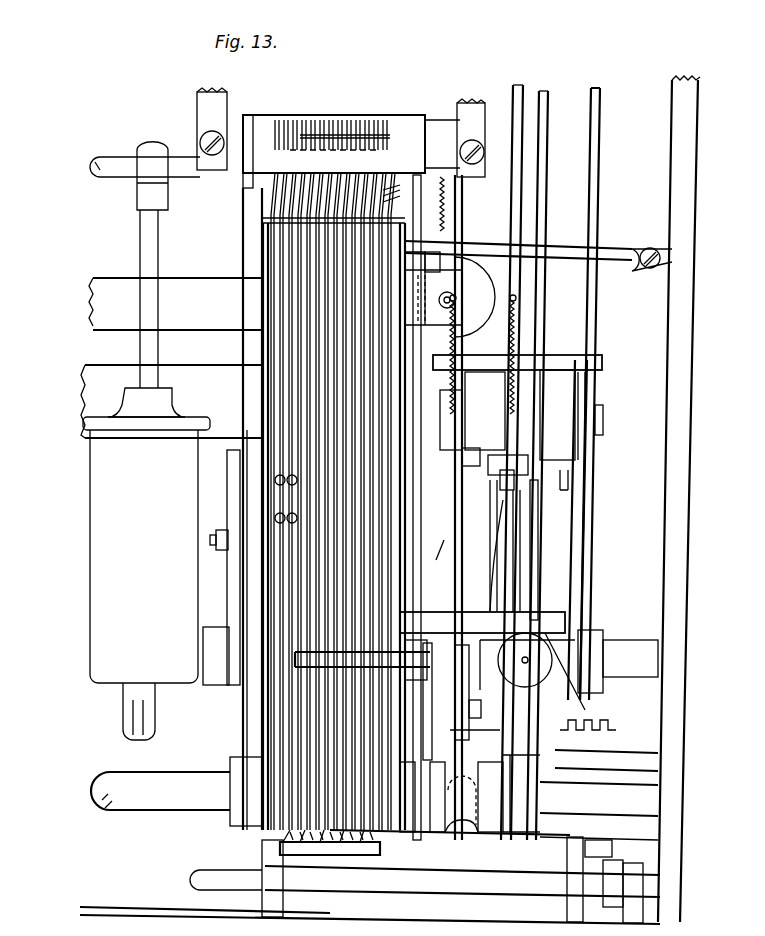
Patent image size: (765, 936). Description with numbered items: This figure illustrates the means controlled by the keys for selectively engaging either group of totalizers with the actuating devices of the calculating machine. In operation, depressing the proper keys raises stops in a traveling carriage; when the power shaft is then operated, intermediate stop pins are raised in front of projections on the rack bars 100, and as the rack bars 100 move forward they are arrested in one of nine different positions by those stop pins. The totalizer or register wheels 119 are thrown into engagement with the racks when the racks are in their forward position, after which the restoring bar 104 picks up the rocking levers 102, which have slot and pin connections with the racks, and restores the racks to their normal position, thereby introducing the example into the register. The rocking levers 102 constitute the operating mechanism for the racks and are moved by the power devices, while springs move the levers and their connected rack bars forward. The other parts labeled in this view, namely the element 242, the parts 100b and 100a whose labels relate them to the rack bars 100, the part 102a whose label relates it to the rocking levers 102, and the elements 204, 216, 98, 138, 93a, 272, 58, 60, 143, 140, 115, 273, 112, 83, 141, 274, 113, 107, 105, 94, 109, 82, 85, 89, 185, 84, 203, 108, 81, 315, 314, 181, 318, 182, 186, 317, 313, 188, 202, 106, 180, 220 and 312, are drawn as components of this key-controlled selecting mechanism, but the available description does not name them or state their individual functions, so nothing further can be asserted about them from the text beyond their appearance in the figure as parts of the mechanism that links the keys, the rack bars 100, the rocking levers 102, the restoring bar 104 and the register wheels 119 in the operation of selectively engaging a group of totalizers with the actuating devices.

The stop bar 242 is at (375, 130).
The reed holder 100b is at (275, 140).
The reed slot 100a is at (335, 157).
The rack bars 100 is at (332, 142).
The rod 204 is at (145, 176).
The bracket 216 is at (252, 182).
The rocking levers 102 is at (350, 212).
The restoring bar 104 is at (405, 200).
The spring 98 is at (447, 213).
The bar 138 is at (517, 155).
The frame bar 93a is at (553, 250).
The bar 272 is at (537, 276).
The bar 58 is at (171, 358).
The lever 60 is at (470, 296).
The cross bar with springs 143 is at (510, 345).
The block 140 is at (508, 400).
The block 115 is at (560, 413).
The rod 273 is at (540, 424).
The lug 112 is at (582, 445).
The block 83 is at (508, 468).
The block 141 is at (478, 470).
The lug 274 is at (556, 480).
The bar 113 is at (585, 494).
The lug 107 is at (222, 530).
The frame strip 105 is at (252, 730).
The reed frame 94 is at (407, 548).
The rod 109 is at (572, 521).
The rod 82 is at (490, 560).
The rod 85 is at (522, 555).
The link 89 is at (437, 585).
The link 185 is at (510, 597).
The cross bar 84 is at (486, 585).
The cylinder 203 is at (146, 446).
The strip 108 is at (226, 590).
The block 81 is at (245, 652).
The bar 315 is at (362, 660).
The bar 314 is at (432, 690).
The pulley 181 is at (520, 720).
The bar 318 is at (480, 712).
The block 182 is at (577, 718).
The block 186 is at (575, 732).
The pin 317 is at (500, 727).
The block 313 is at (438, 772).
The bar 188 is at (606, 756).
The stem 202 is at (150, 723).
The shaft 106 is at (374, 791).
The block 180 is at (600, 848).
The reed hooks 102a is at (335, 842).
The register wheels 119 is at (347, 844).
The bracket 220 is at (492, 808).
The base 312 is at (460, 835).